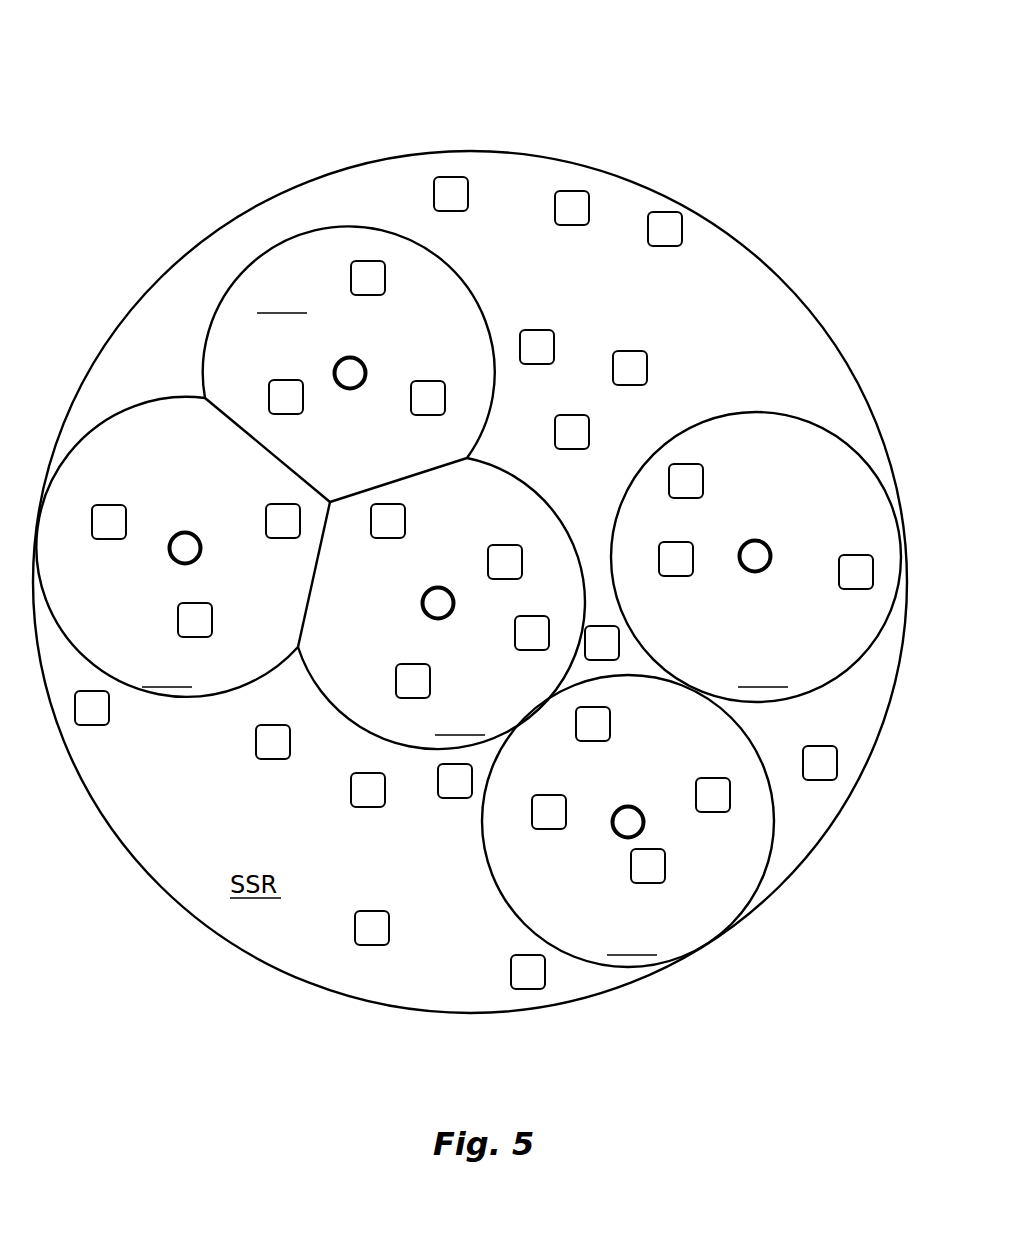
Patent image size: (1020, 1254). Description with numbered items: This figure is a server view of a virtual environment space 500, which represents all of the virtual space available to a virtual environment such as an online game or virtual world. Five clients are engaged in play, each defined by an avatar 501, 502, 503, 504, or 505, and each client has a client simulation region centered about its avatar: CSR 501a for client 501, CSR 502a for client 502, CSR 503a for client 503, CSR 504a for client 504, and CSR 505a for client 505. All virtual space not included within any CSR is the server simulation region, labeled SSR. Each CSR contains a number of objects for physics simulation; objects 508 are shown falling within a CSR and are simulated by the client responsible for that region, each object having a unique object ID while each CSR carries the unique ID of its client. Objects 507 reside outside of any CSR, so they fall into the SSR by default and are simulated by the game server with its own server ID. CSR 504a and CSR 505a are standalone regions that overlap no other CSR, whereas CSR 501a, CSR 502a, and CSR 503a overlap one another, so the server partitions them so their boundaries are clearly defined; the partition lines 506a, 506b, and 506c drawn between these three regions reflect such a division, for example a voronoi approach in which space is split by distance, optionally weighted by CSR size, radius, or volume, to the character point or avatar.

The virtual environment space 500 is at (477, 123).
The avatar 501 is at (350, 356).
The client simulation region (CSR) 501a is at (489, 325).
The avatar 502 is at (183, 565).
The client simulation region (CSR) 502a is at (229, 697).
The avatar 503 is at (453, 608).
The client simulation region (CSR) 503a is at (373, 737).
The avatar 504 is at (772, 556).
The client simulation region (CSR) 504a is at (806, 412).
The avatar 505 is at (611, 822).
The client simulation region (CSR) 505a is at (503, 897).
The cell boundary between first and second cells 506a is at (245, 431).
The cell boundary between first and third cells 506b is at (385, 483).
The cell boundary between second and third cells 506c is at (315, 567).
The objects 507 is at (572, 415).
The objects 508 is at (549, 630).